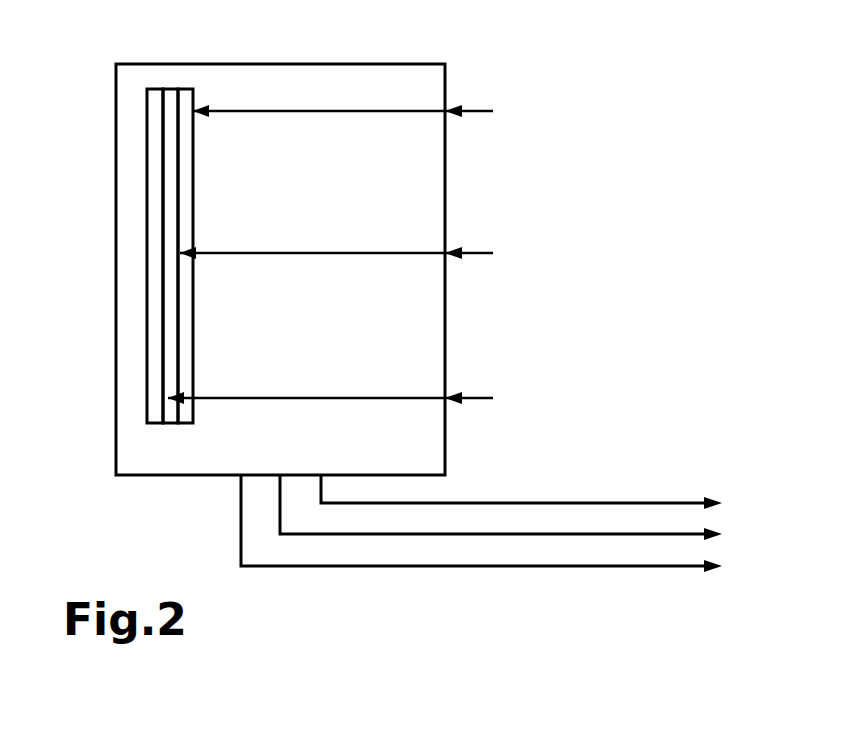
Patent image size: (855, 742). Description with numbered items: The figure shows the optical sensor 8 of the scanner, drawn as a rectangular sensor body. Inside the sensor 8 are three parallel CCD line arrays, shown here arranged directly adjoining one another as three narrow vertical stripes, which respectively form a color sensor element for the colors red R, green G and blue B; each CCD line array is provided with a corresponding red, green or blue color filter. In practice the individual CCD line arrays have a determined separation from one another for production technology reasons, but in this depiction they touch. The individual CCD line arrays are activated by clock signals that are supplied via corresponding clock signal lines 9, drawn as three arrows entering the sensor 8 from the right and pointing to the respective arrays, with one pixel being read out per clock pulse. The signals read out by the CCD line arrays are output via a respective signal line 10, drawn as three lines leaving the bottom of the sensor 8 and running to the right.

The optical sensor 8 is at (494, 40).
The clock signal lines 9 is at (483, 110).
The signal line 10 is at (558, 534).
The red color sensor element R is at (153, 424).
The green color sensor element G is at (170, 424).
The blue color sensor element B is at (187, 424).